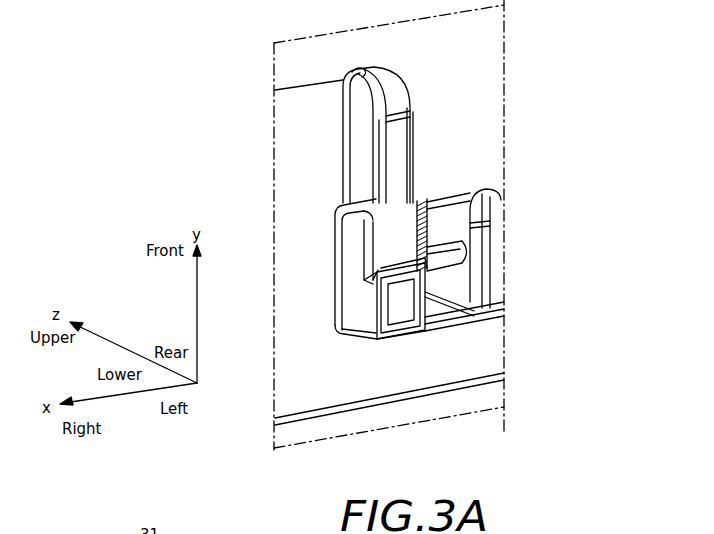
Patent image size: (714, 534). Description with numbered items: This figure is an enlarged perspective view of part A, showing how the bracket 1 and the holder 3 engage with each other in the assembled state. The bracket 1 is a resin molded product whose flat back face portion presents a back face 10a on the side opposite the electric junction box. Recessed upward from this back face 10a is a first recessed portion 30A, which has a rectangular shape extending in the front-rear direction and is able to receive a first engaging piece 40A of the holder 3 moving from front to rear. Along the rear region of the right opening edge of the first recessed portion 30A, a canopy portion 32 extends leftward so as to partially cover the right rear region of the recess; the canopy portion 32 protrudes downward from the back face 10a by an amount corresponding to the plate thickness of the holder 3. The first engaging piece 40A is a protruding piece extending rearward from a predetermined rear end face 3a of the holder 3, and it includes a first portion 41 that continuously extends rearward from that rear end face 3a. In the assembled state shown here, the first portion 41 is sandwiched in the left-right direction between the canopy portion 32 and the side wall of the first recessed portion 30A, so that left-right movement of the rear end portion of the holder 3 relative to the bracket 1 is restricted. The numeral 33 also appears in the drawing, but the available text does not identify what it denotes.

The part A is at (505, 72).
The holder 3 is at (486, 155).
The rear end face 3a is at (427, 203).
The tab 33 is at (397, 203).
The canopy portion 32 is at (393, 246).
The first portion 41 is at (457, 235).
The first engaging piece 40A is at (485, 248).
The first recessed portion 30A is at (442, 309).
The back face 10a is at (312, 352).
The bracket 1 is at (470, 357).